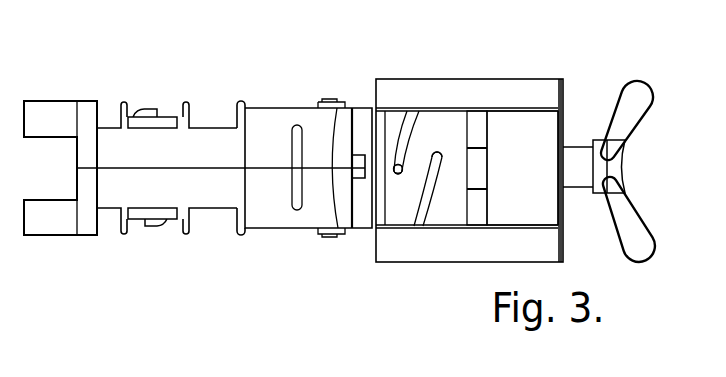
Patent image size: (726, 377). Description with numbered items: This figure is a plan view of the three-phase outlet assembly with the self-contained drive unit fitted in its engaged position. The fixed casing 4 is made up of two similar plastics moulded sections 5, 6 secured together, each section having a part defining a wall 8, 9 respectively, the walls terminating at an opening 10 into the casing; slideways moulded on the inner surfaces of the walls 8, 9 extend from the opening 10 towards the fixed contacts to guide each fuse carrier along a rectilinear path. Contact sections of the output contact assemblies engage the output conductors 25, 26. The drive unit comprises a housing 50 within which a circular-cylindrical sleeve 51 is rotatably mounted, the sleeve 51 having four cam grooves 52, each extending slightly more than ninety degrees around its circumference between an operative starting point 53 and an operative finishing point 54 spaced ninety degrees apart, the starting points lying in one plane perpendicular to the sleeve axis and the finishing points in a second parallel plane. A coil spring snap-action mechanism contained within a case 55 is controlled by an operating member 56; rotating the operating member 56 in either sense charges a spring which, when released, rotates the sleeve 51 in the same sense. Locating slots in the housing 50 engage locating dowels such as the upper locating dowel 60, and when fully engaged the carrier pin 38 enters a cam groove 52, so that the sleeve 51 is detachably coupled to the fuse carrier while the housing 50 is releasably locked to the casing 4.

The casing 4 is at (257, 101).
The casing section 5 is at (292, 107).
The casing section 6 is at (284, 218).
The wall 8 is at (344, 115).
The wall 9 is at (345, 215).
The opening 10 is at (358, 206).
The output conductor 25 is at (140, 216).
The output conductor 26 is at (163, 121).
The pin 38 is at (397, 175).
The housing 50 is at (562, 79).
The sleeve 51 is at (452, 117).
The cam groove 52 is at (404, 127).
The operative starting point 53 is at (440, 167).
The operative finishing point 54 is at (402, 166).
The case 55 is at (538, 130).
The operating member 56 is at (641, 107).
The upper locating dowel 60 is at (337, 101).